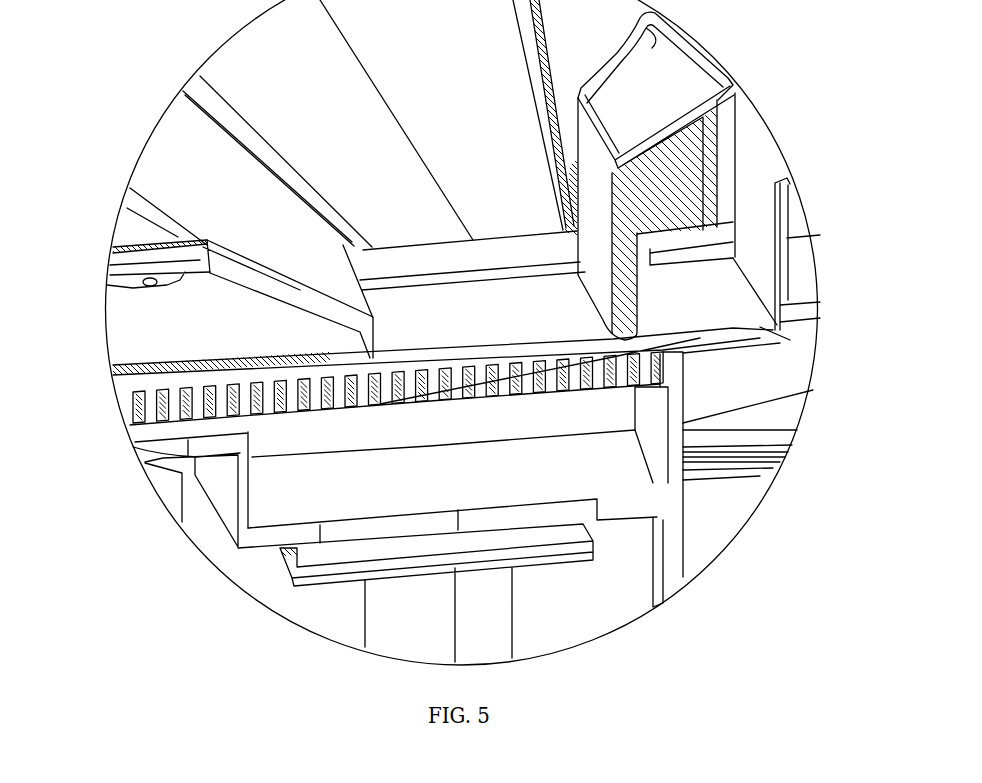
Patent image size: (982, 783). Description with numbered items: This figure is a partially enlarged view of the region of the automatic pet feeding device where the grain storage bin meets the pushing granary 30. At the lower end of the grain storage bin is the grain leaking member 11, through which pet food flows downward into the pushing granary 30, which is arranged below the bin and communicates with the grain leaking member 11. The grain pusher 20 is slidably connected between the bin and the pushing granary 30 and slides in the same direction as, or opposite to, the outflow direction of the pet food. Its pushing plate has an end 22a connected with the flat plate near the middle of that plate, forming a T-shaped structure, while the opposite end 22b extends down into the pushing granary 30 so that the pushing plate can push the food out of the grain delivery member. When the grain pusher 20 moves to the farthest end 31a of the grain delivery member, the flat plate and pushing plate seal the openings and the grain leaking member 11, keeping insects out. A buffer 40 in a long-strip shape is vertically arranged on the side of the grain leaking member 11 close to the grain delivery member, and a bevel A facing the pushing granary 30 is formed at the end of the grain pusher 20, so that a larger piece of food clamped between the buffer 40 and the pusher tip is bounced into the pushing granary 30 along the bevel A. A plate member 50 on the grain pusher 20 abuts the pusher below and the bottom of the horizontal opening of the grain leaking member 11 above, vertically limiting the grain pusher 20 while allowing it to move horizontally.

The grain leaking member 11 is at (488, 302).
The grain pusher 20 is at (613, 340).
The end of the pushing plate 22a is at (677, 360).
The opposite end of the pushing plate 22b is at (660, 423).
The pushing granary 30 is at (597, 413).
The farthest end of the grain delivery member 31a is at (770, 328).
The buffer 40 is at (688, 180).
The plate member 50 is at (200, 370).
The bevel A is at (745, 335).